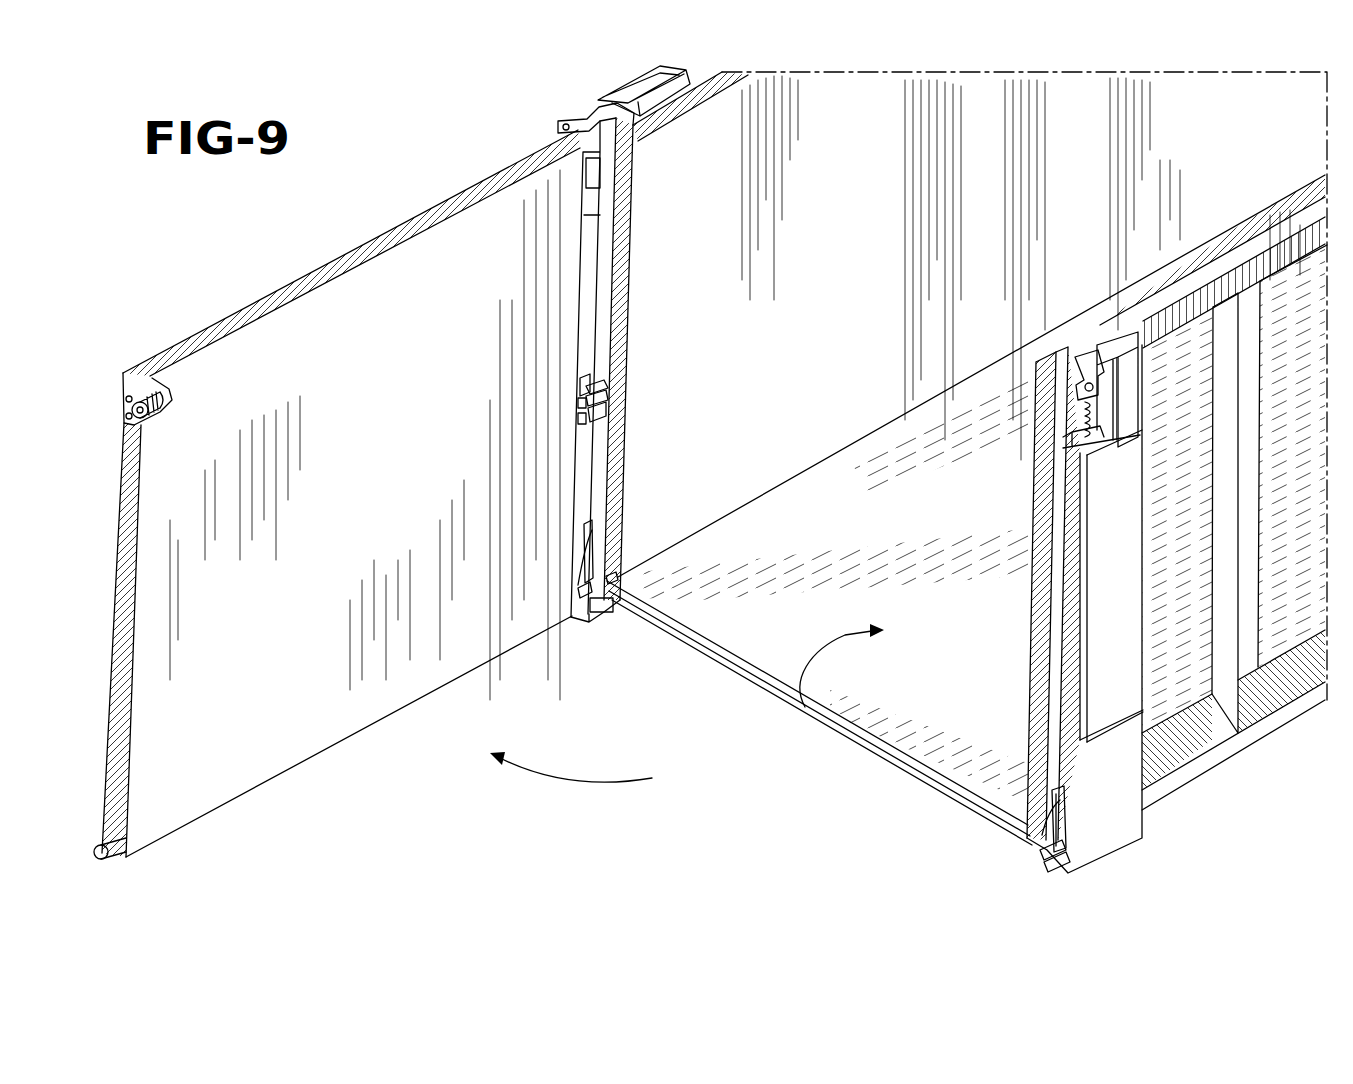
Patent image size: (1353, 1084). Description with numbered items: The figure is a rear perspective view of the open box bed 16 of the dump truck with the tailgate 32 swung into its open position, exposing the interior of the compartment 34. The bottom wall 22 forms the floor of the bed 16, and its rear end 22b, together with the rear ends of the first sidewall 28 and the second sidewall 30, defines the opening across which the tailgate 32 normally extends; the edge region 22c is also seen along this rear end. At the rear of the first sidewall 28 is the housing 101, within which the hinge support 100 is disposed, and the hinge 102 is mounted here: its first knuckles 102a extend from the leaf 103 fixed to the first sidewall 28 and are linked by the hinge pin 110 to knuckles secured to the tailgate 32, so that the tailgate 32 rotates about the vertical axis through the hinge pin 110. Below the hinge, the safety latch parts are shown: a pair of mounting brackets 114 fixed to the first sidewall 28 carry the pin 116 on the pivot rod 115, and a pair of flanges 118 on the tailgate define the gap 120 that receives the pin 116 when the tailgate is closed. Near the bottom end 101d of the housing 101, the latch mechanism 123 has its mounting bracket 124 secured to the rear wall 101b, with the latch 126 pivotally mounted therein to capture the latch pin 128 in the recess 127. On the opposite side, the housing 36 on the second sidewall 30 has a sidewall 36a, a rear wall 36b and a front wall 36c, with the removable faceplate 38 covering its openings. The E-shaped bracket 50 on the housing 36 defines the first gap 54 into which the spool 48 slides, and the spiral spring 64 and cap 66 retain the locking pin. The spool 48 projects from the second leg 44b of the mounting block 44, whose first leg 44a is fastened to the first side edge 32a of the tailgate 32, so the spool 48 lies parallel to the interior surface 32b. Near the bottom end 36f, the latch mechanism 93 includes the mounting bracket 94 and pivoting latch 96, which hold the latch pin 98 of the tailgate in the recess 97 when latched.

The open box bed 16 is at (1213, 501).
The bottom wall 22 is at (907, 510).
The rear end of bottom wall 22b is at (748, 622).
The floor edge surface 22c is at (832, 718).
The first sidewall 28 is at (858, 196).
The second sidewall 30 is at (1030, 514).
The tailgate 32 is at (324, 494).
The first side edge of tailgate 32a is at (118, 566).
The interior surface of tailgate 32b is at (400, 423).
The compartment 34 is at (819, 713).
The housing 36 is at (1073, 605).
The sidewall of housing 36a is at (1110, 735).
The rear wall of housing 36b is at (1064, 638).
The front wall of housing 36c is at (1144, 334).
The bottom end of housing 36f is at (1146, 840).
The removable faceplate 38 is at (1130, 544).
The mounting block 44 is at (153, 384).
The first leg of mounting block 44a is at (122, 406).
The second leg of mounting block 44b is at (165, 388).
The spool 48 is at (165, 422).
The E-shaped bracket 50 is at (1090, 384).
The first gap 54 is at (1090, 378).
The spiral spring 64 is at (1088, 440).
The cap 66 is at (1090, 420).
The latch mechanism 93 is at (1039, 832).
The mounting bracket 94 is at (1070, 820).
The latch 96 is at (1030, 828).
The recess 97 is at (1030, 845).
The latch pin 98 is at (102, 846).
The hinge support 100 is at (660, 107).
The housing 101 is at (579, 384).
The rear wall of housing 101b is at (602, 292).
The bottom end of housing 101d is at (601, 614).
The hinge 102 is at (557, 128).
The first knuckles 102a is at (595, 140).
The leaf 103 is at (608, 173).
The hinge pin 110 is at (552, 128).
The mounting brackets 114 is at (604, 396).
The pivot rod 115 is at (596, 386).
The pin 116 is at (583, 380).
The flanges 118 is at (582, 420).
The gap 120 is at (596, 415).
The latch mechanism 123 is at (588, 564).
The mounting bracket 124 is at (584, 532).
The latch 126 is at (581, 558).
The recess 127 is at (576, 590).
The latch pin 128 is at (580, 613).